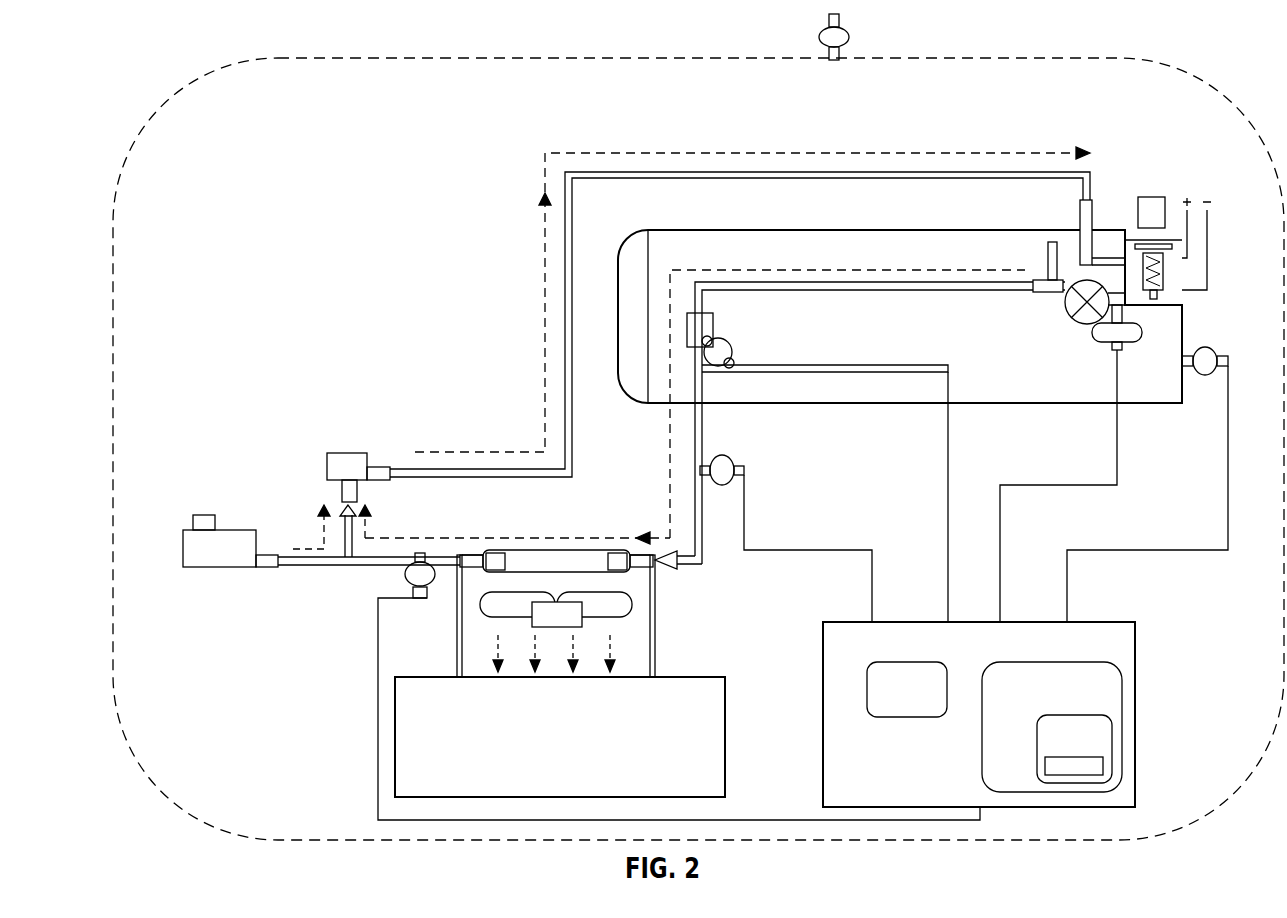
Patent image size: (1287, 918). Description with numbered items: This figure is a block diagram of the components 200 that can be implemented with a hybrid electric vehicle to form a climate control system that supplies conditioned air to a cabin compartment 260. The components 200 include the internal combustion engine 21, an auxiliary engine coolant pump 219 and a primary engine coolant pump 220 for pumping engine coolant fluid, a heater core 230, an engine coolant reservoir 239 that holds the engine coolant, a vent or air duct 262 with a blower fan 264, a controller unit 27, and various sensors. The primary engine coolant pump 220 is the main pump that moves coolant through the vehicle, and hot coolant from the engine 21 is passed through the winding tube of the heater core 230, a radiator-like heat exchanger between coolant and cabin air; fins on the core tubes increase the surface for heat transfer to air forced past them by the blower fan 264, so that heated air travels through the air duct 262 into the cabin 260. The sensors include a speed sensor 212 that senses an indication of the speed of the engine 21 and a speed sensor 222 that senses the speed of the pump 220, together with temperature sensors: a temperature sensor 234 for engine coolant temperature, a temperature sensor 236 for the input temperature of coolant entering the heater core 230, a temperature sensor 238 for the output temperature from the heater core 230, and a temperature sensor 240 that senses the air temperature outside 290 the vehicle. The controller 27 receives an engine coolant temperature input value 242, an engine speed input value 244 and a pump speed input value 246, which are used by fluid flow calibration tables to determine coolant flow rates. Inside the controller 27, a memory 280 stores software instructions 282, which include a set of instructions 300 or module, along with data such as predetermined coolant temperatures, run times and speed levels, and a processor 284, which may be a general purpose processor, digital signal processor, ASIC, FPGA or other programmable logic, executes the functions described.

The outside 290 is at (112, 62).
The components 200 is at (572, 52).
The temperature sensor 240 is at (850, 35).
The internal combustion engine 21 is at (915, 229).
The temperature sensor 234 is at (738, 343).
The primary engine coolant pump 220 is at (1065, 308).
The speed sensor 222 is at (1115, 347).
The speed sensor 212 is at (1207, 346).
The auxiliary engine coolant pump 219 is at (327, 468).
The engine coolant reservoir 239 is at (200, 515).
The temperature sensor 236 is at (740, 462).
The temperature sensor 238 is at (745, 525).
The engine coolant temperature input value 242 is at (948, 458).
The pump speed input value 246 is at (1118, 452).
The engine speed input value 244 is at (1130, 550).
The controller unit 27 is at (1013, 705).
The heater core 230 is at (580, 548).
The blower fan 264 is at (632, 605).
The air duct 262 is at (655, 655).
The cabin compartment 260 is at (727, 752).
The processor 284 is at (886, 702).
The memory 280 is at (989, 698).
The software instructions 282 is at (1053, 749).
The set of instructions 300 is at (1105, 770).